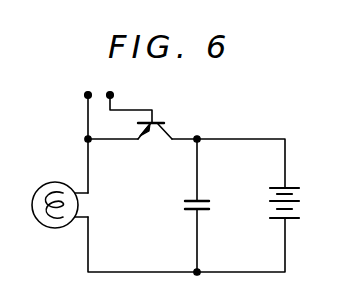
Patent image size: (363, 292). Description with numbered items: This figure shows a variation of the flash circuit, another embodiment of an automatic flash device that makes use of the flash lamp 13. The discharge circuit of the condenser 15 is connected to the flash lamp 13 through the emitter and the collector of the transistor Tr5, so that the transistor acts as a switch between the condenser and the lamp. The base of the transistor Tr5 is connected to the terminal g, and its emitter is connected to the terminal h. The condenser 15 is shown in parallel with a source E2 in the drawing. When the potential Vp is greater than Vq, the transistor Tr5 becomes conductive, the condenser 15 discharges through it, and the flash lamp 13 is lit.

The flash lamp 13 is at (50, 182).
The condenser 15 is at (205, 219).
The transistor Tr5 is at (155, 122).
The battery E2 is at (298, 203).
The terminal h is at (88, 95).
The terminal g is at (110, 95).